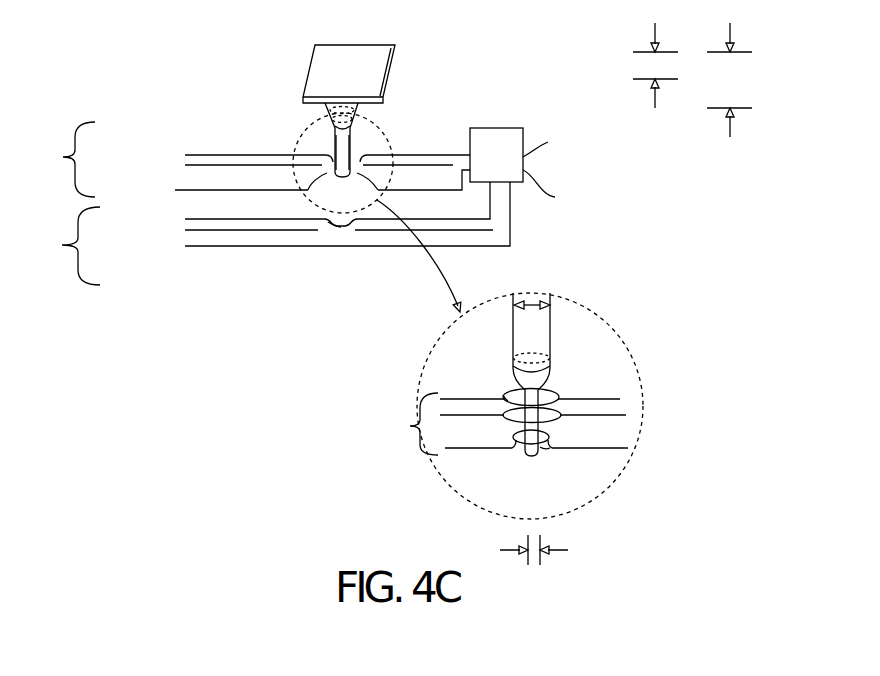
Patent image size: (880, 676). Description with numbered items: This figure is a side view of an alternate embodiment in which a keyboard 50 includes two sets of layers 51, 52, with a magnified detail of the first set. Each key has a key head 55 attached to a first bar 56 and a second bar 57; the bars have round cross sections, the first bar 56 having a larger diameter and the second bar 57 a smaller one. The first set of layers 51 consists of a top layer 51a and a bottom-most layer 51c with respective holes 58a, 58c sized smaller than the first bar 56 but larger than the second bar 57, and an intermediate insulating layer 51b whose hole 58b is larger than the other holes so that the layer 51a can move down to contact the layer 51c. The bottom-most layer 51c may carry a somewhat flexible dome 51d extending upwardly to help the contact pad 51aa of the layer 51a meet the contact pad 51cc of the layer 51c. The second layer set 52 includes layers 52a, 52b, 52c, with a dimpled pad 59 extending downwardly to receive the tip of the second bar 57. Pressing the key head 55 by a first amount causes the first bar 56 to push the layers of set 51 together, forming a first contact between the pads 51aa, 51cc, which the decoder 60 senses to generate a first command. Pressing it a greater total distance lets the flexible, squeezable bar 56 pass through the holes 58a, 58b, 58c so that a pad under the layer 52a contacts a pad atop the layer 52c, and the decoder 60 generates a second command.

The keyboard 50 is at (63, 78).
The first set of layers 51 is at (63, 157).
The top layer 51a is at (197, 155).
The intermediate insulating layer 51b is at (185, 165).
The bottom-most layer 51c is at (178, 190).
The flexible dome 51d is at (302, 170).
The contact pad 51aa is at (504, 396).
The contact pad 51cc is at (545, 450).
The second set of layers 52 is at (62, 245).
The top layer of second set 52a is at (185, 219).
The intermediate layer of second set 52b is at (185, 231).
The bottom layer of second set 52c is at (203, 247).
The key head 55 is at (383, 48).
The first bar 56 is at (362, 120).
The second bar 57 is at (344, 147).
The hole 58a is at (510, 390).
The hole 58b is at (506, 417).
The hole 58c is at (516, 444).
The dimpled pad 59 is at (333, 227).
The decoder 60 is at (508, 128).